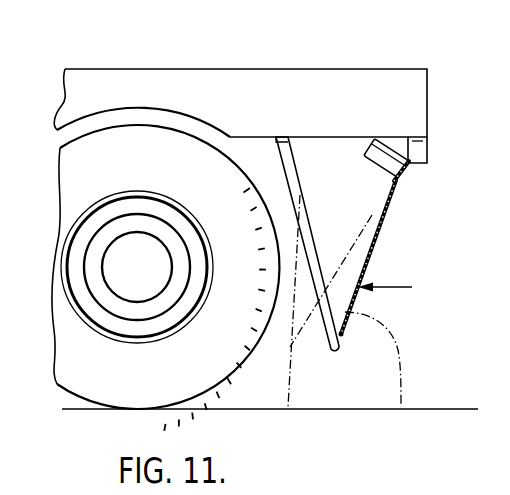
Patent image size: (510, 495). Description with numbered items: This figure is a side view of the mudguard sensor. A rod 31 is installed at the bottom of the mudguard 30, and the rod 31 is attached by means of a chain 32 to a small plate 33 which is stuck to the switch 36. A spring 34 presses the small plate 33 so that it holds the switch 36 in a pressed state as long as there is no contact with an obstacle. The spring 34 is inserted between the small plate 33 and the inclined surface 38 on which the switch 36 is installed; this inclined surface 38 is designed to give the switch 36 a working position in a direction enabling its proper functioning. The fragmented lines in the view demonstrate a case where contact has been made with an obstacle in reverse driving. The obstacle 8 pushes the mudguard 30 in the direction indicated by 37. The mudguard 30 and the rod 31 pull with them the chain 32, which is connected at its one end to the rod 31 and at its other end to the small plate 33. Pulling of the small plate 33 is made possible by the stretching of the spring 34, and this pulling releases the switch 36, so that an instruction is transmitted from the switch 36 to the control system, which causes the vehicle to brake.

The obstacle 8 is at (402, 368).
The mudguard 30 is at (300, 198).
The rod 31 is at (342, 333).
The chain 32 is at (382, 229).
The small plate 33 is at (372, 170).
The spring 34 is at (410, 180).
The switch 36 is at (380, 137).
The direction of mudguard movement 37 is at (385, 276).
The inclined surface 38 is at (428, 154).